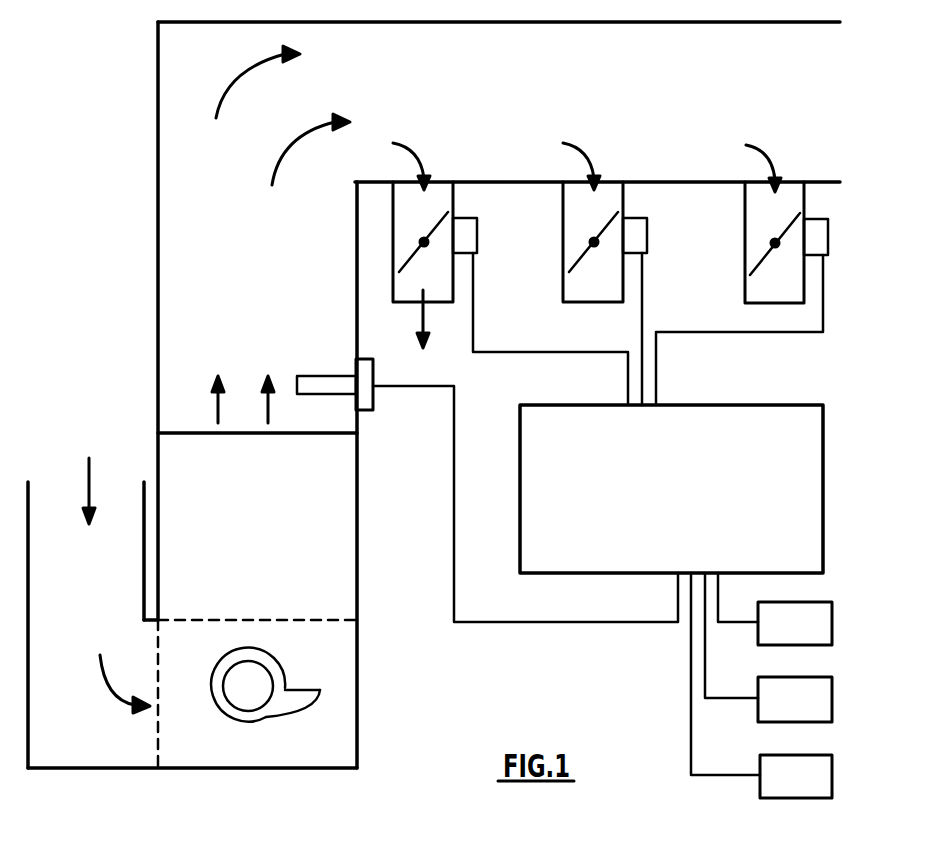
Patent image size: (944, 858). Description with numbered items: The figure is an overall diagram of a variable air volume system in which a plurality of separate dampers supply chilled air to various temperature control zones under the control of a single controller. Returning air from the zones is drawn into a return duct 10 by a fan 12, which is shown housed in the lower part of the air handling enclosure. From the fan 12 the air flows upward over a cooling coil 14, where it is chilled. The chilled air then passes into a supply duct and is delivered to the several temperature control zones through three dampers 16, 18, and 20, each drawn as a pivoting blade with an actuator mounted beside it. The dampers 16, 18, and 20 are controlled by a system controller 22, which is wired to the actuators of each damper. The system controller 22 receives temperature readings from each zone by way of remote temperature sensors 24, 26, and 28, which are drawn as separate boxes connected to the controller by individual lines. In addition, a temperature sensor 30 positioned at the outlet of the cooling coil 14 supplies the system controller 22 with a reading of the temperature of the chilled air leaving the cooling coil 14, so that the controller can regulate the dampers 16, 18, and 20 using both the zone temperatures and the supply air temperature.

The return duct 10 is at (60, 750).
The fan 12 is at (283, 725).
The cooling coil 14 is at (357, 578).
The damper 16 is at (415, 251).
The damper 18 is at (578, 268).
The damper 20 is at (756, 268).
The system controller 22 is at (770, 405).
The remote temperature sensor 24 is at (790, 602).
The remote temperature sensor 26 is at (790, 677).
The remote temperature sensor 28 is at (790, 755).
The temperature sensor 30 is at (377, 371).